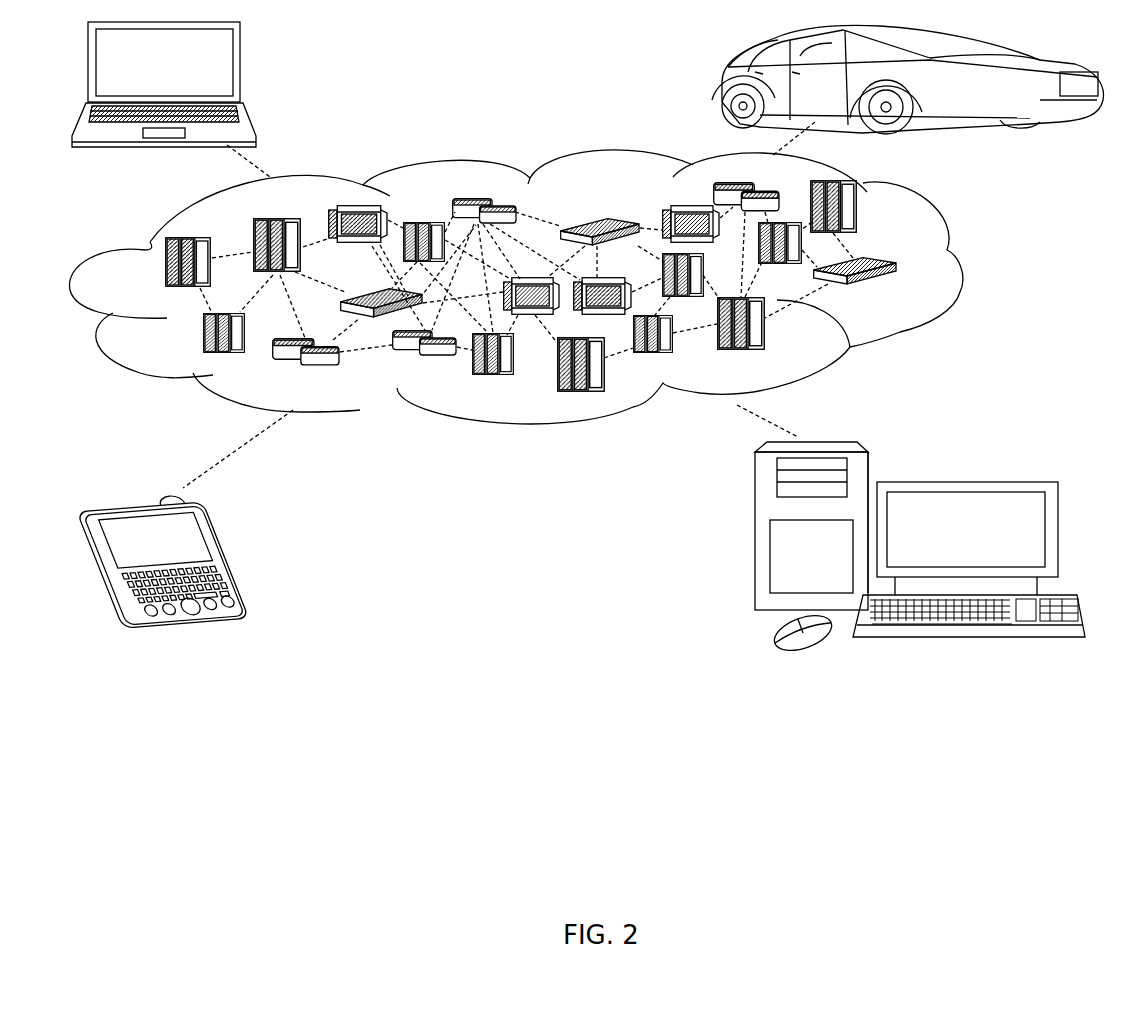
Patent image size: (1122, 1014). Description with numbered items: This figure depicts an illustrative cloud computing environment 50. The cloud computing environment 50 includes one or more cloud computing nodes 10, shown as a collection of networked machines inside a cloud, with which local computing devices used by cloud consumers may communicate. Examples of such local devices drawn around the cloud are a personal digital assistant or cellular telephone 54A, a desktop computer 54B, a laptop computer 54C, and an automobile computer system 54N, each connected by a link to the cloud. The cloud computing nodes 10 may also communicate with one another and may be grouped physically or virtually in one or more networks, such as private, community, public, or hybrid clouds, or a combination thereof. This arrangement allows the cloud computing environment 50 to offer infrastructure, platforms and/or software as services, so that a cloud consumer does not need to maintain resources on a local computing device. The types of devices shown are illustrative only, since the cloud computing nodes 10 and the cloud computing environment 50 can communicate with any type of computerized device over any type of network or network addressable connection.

The laptop computer 54C is at (240, 70).
The automobile computer system 54N is at (725, 80).
The personal digital assistant (PDA) or cellular telephone 54A is at (227, 552).
The desktop computer 54B is at (975, 468).
The cloud computing environment 50 is at (548, 305).
The cloud computing nodes 10 is at (905, 294).